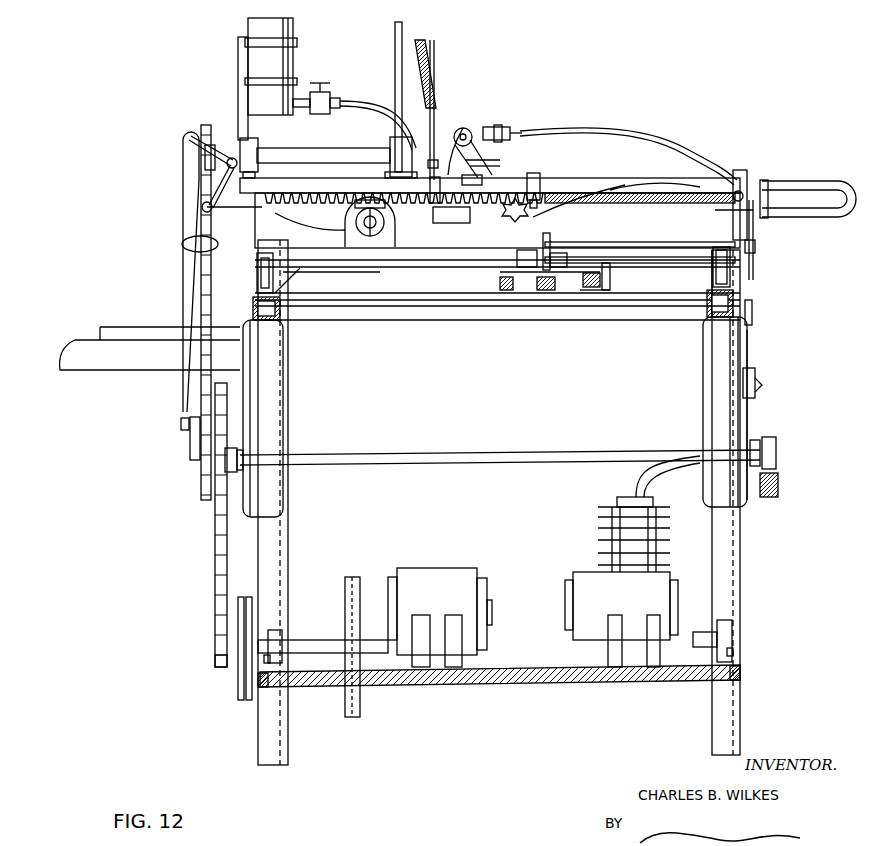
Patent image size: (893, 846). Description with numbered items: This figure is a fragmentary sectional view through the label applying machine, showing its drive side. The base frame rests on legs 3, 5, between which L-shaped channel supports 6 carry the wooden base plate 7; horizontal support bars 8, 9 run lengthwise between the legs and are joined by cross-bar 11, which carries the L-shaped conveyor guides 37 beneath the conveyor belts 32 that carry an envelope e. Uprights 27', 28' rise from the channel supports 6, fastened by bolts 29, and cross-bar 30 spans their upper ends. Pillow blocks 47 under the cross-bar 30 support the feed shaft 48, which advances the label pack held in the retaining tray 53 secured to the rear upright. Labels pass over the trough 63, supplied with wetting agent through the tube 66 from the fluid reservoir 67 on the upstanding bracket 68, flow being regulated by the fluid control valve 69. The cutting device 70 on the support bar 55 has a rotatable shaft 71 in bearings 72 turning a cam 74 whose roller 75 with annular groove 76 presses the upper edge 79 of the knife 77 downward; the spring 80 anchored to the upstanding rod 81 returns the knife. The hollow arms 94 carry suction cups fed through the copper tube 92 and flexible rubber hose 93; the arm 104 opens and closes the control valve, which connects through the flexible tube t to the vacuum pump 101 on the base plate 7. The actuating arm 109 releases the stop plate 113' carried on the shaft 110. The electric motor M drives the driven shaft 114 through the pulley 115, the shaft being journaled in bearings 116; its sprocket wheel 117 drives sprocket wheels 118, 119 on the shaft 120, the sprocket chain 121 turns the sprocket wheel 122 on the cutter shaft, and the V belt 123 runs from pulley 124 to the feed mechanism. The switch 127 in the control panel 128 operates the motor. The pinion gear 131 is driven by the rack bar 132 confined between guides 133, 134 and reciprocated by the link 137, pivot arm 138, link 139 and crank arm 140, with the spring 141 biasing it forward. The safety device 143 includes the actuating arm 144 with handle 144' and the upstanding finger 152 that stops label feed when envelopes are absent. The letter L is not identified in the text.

The leg 3 is at (730, 715).
The leg 5 is at (290, 735).
The L-shaped channel support 6 is at (262, 695).
The wooden base plate 7 is at (605, 680).
The horizontal support bar 8 is at (735, 305).
The horizontal support bar 9 is at (285, 322).
The cross-bar 11 is at (468, 312).
The upright 27' is at (758, 283).
The upright 28' is at (202, 390).
The bolt 29 is at (750, 310).
The cross-bar 30 is at (702, 183).
The conveyor belt 32 is at (545, 292).
The L-shaped conveyor guide 37 is at (602, 292).
The pillow block 47 is at (380, 216).
The feed shaft 48 is at (372, 236).
The retaining tray 53 is at (113, 362).
The lengthwise extending support bar 55 is at (387, 175).
The trough 63 is at (458, 222).
The tube 66 is at (372, 100).
The fluid reservoir 67 is at (285, 60).
The upstanding bracket 68 is at (238, 62).
The fluid control valve 69 is at (322, 88).
The cutting device 70 is at (448, 117).
The rotatable shaft 71 is at (312, 156).
The bearing 72 is at (245, 150).
The cam 74 is at (478, 128).
The roller 75 is at (495, 128).
The annular groove 76 is at (512, 135).
The knife 77 is at (436, 112).
The upper edge 79 is at (488, 122).
The spring 80 is at (428, 48).
The upstanding rod 81 is at (393, 27).
The copper tube 92 is at (620, 138).
The flexible rubber hose 93 is at (830, 217).
The hollow arm 94 is at (480, 176).
The vacuum pump 101 is at (596, 560).
The arm 104 is at (558, 210).
The actuating arm 109 is at (560, 240).
The shaft 110 is at (655, 256).
The stop plate 113' is at (516, 306).
The driven shaft 114 is at (313, 648).
The pulley 115 is at (362, 698).
The bearing 116 is at (285, 638).
The sprocket wheel 117 is at (215, 665).
The sprocket wheel 118 is at (216, 515).
The sprocket wheel 119 is at (203, 497).
The shaft 120 is at (410, 453).
The sprocket chain 121 is at (218, 243).
The sprocket wheel 122 is at (200, 125).
The V belt 123 is at (240, 672).
The pulley 124 is at (247, 690).
The switch 127 is at (757, 372).
The control panel 128 is at (760, 412).
The pinion gear 131 is at (505, 214).
The rack bar 132 is at (322, 272).
The guide 133 is at (434, 200).
The guide 134 is at (538, 173).
The reciprocating link 137 is at (205, 212).
The pivot arm 138 is at (190, 146).
The link 139 is at (188, 181).
The crank arm 140 is at (190, 440).
The spring 141 is at (660, 190).
The safety device 143 is at (345, 272).
The actuating arm 144 is at (703, 251).
The handle 144' is at (760, 240).
The upstanding finger 152 is at (340, 213).
The lever L is at (612, 275).
The electric motor M is at (432, 568).
The envelope e is at (572, 274).
The flexible tube t is at (632, 485).